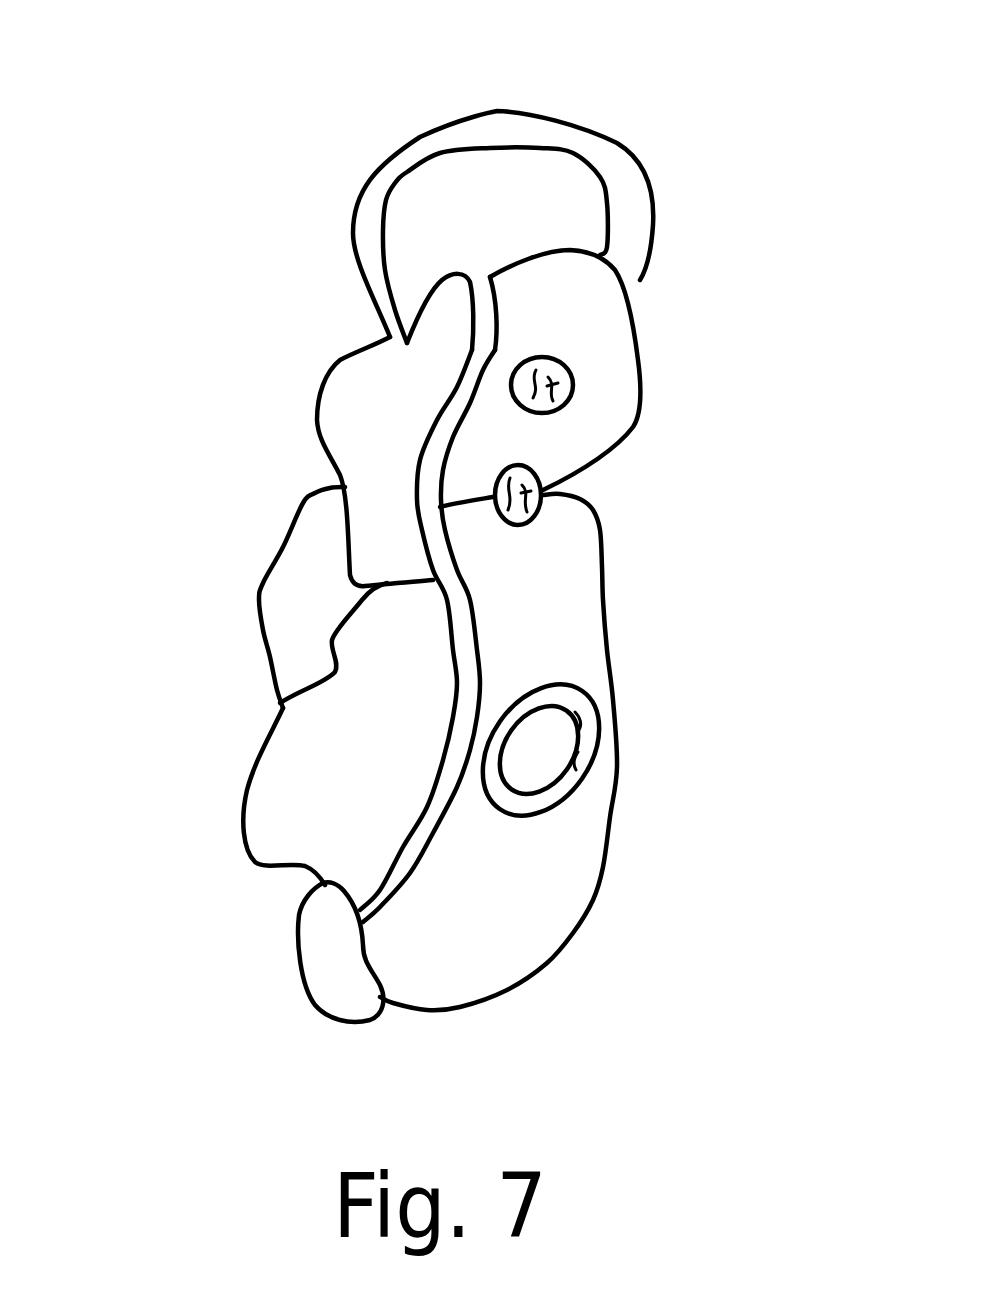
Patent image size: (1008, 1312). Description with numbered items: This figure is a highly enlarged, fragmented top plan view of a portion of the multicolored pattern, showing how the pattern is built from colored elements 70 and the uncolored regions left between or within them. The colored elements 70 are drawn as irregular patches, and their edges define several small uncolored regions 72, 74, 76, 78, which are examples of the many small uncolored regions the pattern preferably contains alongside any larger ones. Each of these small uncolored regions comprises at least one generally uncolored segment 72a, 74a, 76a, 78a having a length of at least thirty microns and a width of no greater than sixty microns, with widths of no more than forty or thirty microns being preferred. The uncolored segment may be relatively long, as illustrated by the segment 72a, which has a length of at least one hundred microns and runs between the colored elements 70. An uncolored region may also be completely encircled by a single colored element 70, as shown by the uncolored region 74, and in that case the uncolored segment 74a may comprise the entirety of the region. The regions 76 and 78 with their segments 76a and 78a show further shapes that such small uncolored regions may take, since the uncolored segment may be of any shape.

The colored elements 70 is at (503, 133).
The uncolored region 72 is at (428, 237).
The uncolored segment 72a is at (453, 428).
The uncolored region 74 is at (560, 383).
The uncolored segment 74a is at (557, 357).
The uncolored region 76 is at (547, 487).
The uncolored segment 76a is at (497, 488).
The uncolored region 78 is at (589, 703).
The uncolored segment 78a is at (580, 760).